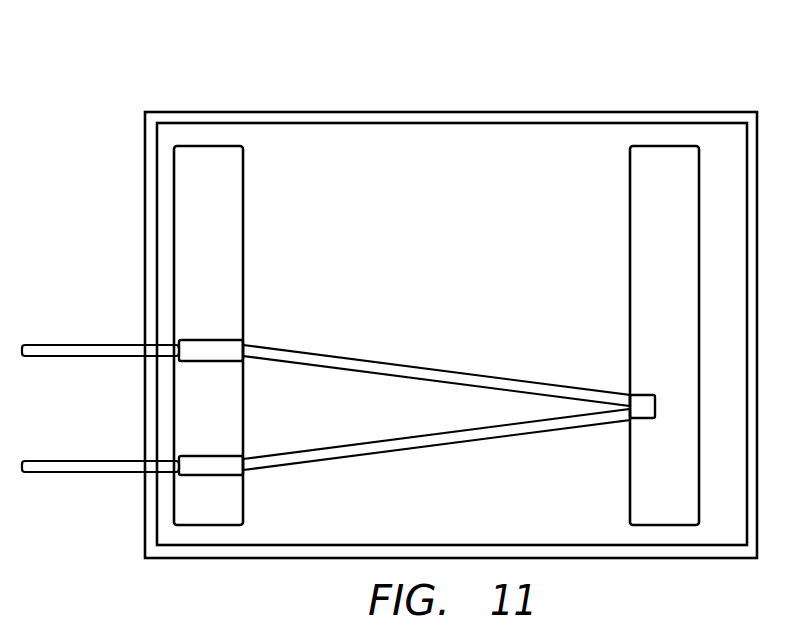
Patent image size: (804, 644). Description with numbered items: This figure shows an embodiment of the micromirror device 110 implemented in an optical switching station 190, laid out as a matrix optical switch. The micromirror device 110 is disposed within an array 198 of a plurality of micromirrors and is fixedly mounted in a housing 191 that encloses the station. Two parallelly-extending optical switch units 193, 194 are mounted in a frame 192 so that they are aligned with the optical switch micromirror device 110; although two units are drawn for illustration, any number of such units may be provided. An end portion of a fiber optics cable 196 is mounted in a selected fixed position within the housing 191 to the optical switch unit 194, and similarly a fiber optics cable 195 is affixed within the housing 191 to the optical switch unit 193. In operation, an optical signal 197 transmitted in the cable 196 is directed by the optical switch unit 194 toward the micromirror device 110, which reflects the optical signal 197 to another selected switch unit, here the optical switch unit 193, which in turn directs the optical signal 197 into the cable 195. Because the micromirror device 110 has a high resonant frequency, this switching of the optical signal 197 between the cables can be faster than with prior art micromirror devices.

The optical switching station 190 is at (190, 70).
The housing 191 is at (512, 110).
The frame 192 is at (243, 208).
The optical switch unit 193 is at (210, 338).
The optical switch unit 194 is at (210, 455).
The fiber optics cable 195 is at (75, 345).
The fiber optics cable 196 is at (77, 472).
The optical signal 197 is at (432, 446).
The array 198 is at (630, 207).
The micromirror device 110 is at (642, 402).